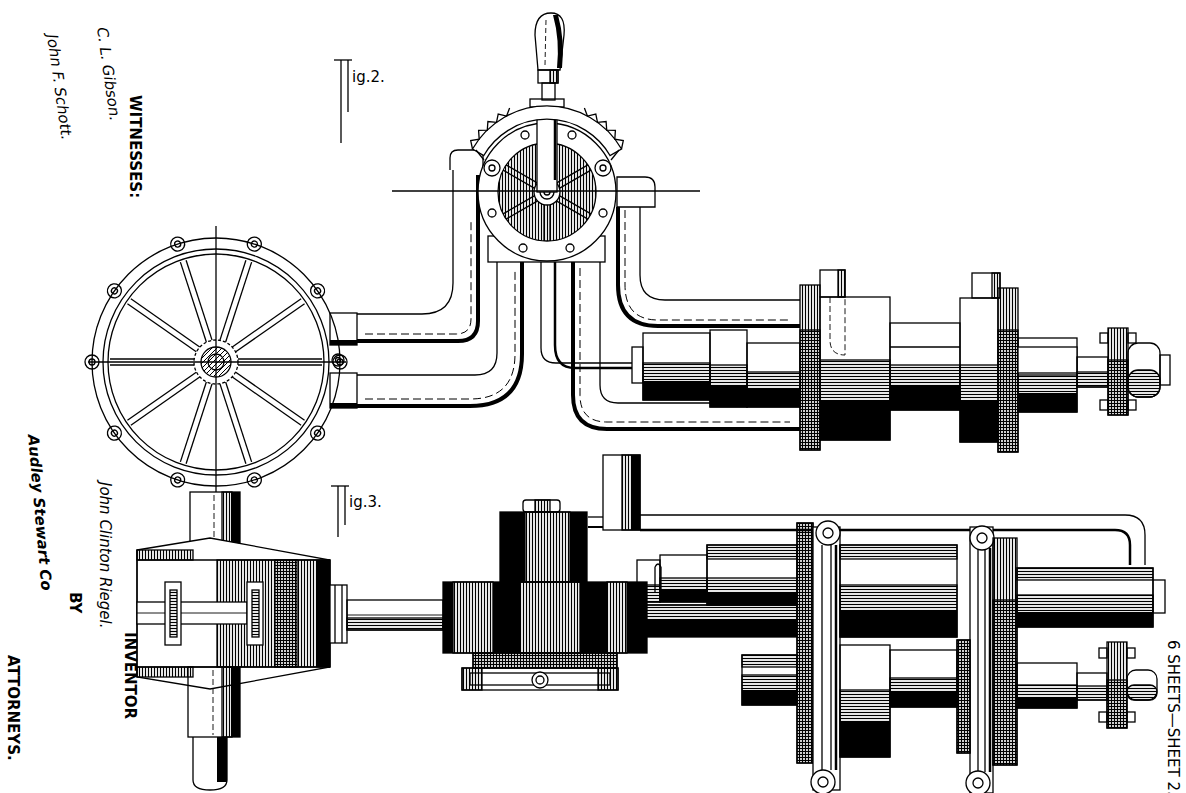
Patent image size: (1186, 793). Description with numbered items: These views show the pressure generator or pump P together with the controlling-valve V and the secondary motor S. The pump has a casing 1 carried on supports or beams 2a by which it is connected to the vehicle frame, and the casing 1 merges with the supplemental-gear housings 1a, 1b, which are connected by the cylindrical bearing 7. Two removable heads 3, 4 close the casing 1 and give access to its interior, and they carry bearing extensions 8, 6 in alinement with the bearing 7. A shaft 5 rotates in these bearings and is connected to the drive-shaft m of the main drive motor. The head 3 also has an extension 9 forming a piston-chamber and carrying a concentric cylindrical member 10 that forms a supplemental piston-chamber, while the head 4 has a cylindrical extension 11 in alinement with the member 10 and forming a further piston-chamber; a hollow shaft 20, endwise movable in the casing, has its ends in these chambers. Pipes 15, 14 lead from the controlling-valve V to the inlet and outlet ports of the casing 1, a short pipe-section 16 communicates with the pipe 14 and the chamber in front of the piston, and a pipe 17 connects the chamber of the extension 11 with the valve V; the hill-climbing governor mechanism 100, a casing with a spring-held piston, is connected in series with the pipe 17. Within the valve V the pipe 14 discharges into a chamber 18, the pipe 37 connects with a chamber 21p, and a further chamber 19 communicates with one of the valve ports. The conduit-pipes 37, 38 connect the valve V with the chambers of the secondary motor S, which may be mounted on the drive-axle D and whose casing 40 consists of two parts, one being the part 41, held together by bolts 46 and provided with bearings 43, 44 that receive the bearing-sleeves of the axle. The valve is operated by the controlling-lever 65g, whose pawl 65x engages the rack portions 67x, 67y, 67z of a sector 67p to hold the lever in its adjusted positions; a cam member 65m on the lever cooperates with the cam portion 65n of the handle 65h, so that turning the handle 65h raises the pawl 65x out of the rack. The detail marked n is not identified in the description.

In FIG. 2, the casing 1 is at (855, 368).
In FIG. 3, the casing 1 is at (882, 562).
In FIG. 2, the supplemental-gear housing 1a is at (845, 442).
In FIG. 3, the supplemental-gear housing 1a is at (866, 758).
In FIG. 2, the supplemental-gear housing 1b is at (960, 430).
In FIG. 3, the supplemental-gear housing 1b is at (957, 722).
In FIG. 2, the supports or beams 2a is at (834, 272).
In FIG. 3, the supports or beams 2a is at (811, 782).
In FIG. 2, the removable head 3 is at (800, 440).
In FIG. 3, the removable head 3 is at (797, 730).
In FIG. 2, the removable head 4 is at (1018, 431).
In FIG. 3, the removable head 4 is at (1017, 727).
In FIG. 2, the shaft 5 is at (1090, 395).
In FIG. 3, the shaft 5 is at (1088, 702).
In FIG. 2, the bearing extension 6 is at (1047, 359).
In FIG. 3, the bearing extension 6 is at (1062, 709).
In FIG. 2, the cylindrical bearing 7 is at (543, 353).
In FIG. 3, the cylindrical bearing 7 is at (915, 708).
In FIG. 2, the bearing extension 8 is at (773, 375).
In FIG. 3, the bearing extension 8 is at (742, 697).
In FIG. 2, the extension 9 is at (728, 368).
In FIG. 3, the extension 9 is at (752, 575).
In FIG. 2, the cylindrical member 10 is at (637, 346).
In FIG. 3, the cylindrical member 10 is at (675, 560).
In FIG. 2, the cylindrical extension 11 is at (1074, 322).
In FIG. 3, the cylindrical extension 11 is at (1052, 570).
In FIG. 2, the pipe 14 is at (705, 299).
In FIG. 3, the pipe 14 is at (668, 634).
In FIG. 2, the pipe 15 is at (88, 362).
In FIG. 2, the short pipe-section 16 is at (457, 350).
In FIG. 3, the short pipe-section 16 is at (640, 570).
In FIG. 2, the pipe 17 is at (572, 370).
In FIG. 3, the pipe 17 is at (748, 518).
In FIG. 2, the chamber 18 is at (642, 201).
In FIG. 2, the chamber 19 is at (602, 251).
In FIG. 2, the shaft 20 is at (495, 252).
In FIG. 2, the chamber 21p is at (484, 131).
In FIG. 2, the conduit-pipe 37 is at (452, 239).
In FIG. 3, the conduit-pipe 37 is at (383, 605).
In FIG. 2, the conduit-pipe 38 is at (497, 350).
In FIG. 2, the casing 40 is at (217, 362).
In FIG. 3, the casing 40 is at (330, 566).
In FIG. 2, the casing part 41 is at (216, 361).
In FIG. 3, the bearing 43 is at (241, 505).
In FIG. 3, the bearing 44 is at (240, 712).
In FIG. 2, the bolts 46 is at (262, 243).
In FIG. 3, the bolts 46 is at (178, 586).
In FIG. 2, the handle 65h is at (536, 25).
In FIG. 2, the cam member 65m is at (538, 77).
In FIG. 2, the cam portion 65n is at (560, 73).
In FIG. 2, the pawl 65x is at (533, 104).
In FIG. 2, the controlling-lever 65g is at (600, 126).
In FIG. 2, the rack portion 67x is at (553, 107).
In FIG. 2, the rack portion 67y is at (586, 114).
In FIG. 2, the sector 67p is at (490, 127).
In FIG. 2, the rack portion 67z is at (606, 131).
In FIG. 2, the notch n is at (486, 118).
In FIG. 3, the hill-climbing governor mechanism 100 is at (641, 484).
In FIG. 2, the drive-axle D is at (240, 355).
In FIG. 3, the drive-axle D is at (222, 774).
In FIG. 2, the pressure generator or pump P is at (907, 263).
In FIG. 3, the pressure generator or pump P is at (907, 767).
In FIG. 2, the secondary motor S is at (216, 348).
In FIG. 3, the secondary motor S is at (233, 603).
In FIG. 2, the controlling-valve V is at (547, 192).
In FIG. 3, the controlling-valve V is at (545, 575).
In FIG. 2, the drive-shaft m is at (1139, 341).
In FIG. 3, the drive-shaft m is at (1140, 676).